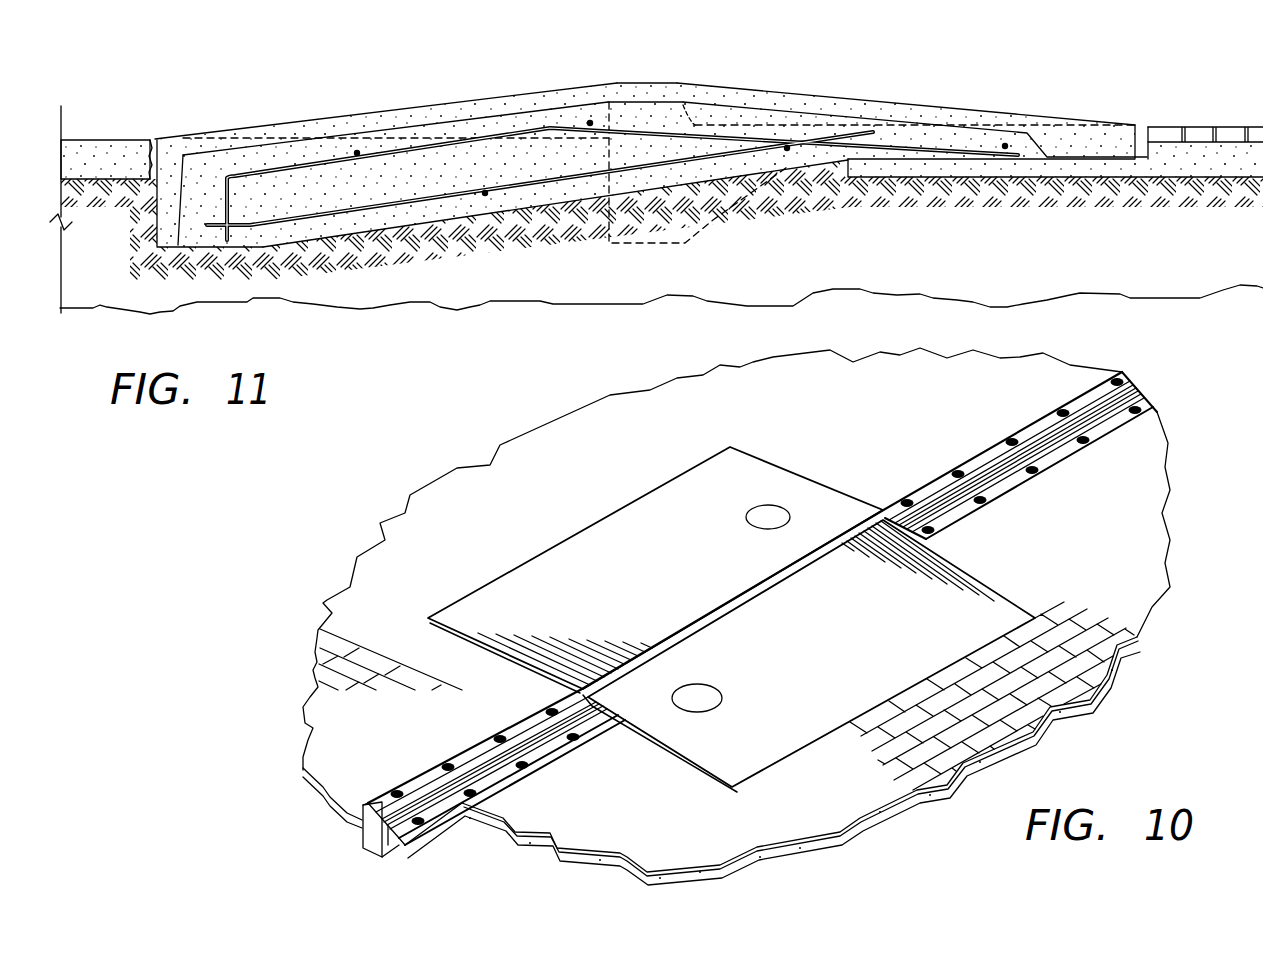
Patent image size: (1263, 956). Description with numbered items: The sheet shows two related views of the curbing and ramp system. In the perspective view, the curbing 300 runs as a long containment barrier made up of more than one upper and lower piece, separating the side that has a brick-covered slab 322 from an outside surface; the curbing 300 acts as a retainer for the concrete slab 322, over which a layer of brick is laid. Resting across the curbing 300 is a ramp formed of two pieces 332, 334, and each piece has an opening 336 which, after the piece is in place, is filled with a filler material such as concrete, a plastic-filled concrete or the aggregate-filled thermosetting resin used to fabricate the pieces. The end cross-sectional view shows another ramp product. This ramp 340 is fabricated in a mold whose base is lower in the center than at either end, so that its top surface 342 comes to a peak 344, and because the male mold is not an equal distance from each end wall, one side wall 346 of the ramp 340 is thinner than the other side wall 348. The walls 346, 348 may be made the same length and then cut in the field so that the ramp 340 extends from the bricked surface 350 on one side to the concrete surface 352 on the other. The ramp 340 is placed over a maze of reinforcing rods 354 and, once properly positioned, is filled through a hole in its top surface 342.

In FIG. 10, the curbing 300 is at (987, 453).
In FIG. 10, the slab 322 is at (927, 748).
In FIG. 10, the ramp piece 332 is at (644, 588).
In FIG. 10, the ramp piece 334 is at (874, 643).
In FIG. 10, the opening 336 is at (746, 515).
In FIG. 11, the ramp 340 is at (709, 139).
In FIG. 11, the top surface 342 is at (843, 100).
In FIG. 11, the peak 344 is at (646, 82).
In FIG. 11, the side wall 346 is at (182, 183).
In FIG. 11, the side wall 348 is at (1106, 133).
In FIG. 11, the bricked surface 350 is at (1197, 127).
In FIG. 11, the concrete surface 352 is at (107, 139).
In FIG. 11, the reinforcing rods 354 is at (398, 150).